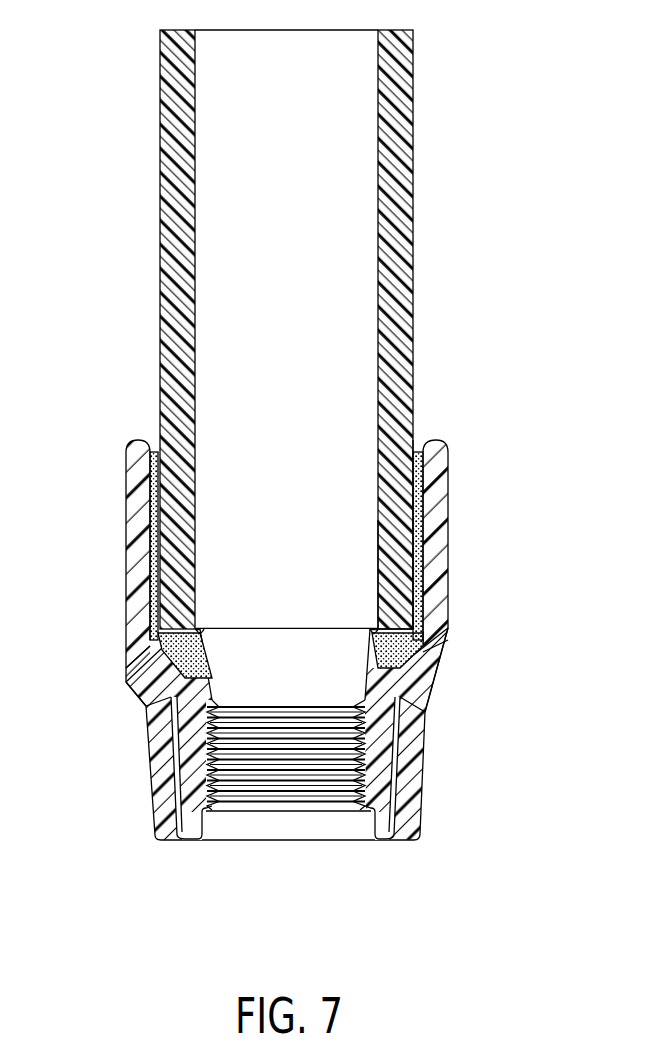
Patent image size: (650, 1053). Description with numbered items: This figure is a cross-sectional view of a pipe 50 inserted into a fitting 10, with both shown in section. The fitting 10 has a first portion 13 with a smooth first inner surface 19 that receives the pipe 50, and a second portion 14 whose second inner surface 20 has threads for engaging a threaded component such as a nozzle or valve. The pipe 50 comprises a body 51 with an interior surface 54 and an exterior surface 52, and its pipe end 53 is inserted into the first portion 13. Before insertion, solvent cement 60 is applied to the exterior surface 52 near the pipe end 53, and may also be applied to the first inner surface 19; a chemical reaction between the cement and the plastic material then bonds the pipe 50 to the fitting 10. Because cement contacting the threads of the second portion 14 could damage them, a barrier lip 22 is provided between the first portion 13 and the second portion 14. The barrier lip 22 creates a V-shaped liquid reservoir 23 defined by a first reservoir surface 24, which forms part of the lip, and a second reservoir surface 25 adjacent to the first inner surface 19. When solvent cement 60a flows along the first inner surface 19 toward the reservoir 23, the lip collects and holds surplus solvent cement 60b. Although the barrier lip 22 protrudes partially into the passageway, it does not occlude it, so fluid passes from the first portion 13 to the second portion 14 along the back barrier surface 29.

The fitting 10 is at (424, 873).
The first portion 13 is at (126, 480).
The second portion 14 is at (425, 762).
The first inner surface 19 is at (420, 540).
The second inner surface 20 is at (368, 738).
The barrier lip 22 is at (206, 630).
The liquid reservoir 23 is at (148, 702).
The first reservoir surface 24 is at (152, 602).
The second reservoir surface 25 is at (162, 650).
The back barrier surface 29 is at (174, 726).
The pipe 50 is at (312, 355).
The body 51 is at (414, 333).
The exterior surface 52 is at (418, 505).
The pipe end 53 is at (412, 668).
The interior surface 54 is at (198, 245).
The solvent cement 60 is at (284, 569).
The solvent cement 60a is at (152, 535).
The surplus solvent cement 60b is at (150, 668).